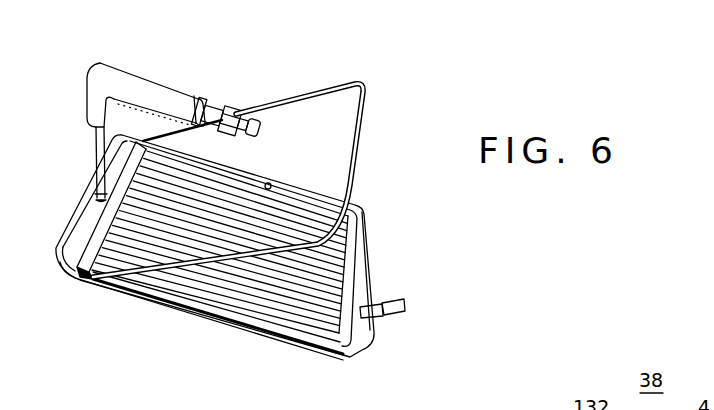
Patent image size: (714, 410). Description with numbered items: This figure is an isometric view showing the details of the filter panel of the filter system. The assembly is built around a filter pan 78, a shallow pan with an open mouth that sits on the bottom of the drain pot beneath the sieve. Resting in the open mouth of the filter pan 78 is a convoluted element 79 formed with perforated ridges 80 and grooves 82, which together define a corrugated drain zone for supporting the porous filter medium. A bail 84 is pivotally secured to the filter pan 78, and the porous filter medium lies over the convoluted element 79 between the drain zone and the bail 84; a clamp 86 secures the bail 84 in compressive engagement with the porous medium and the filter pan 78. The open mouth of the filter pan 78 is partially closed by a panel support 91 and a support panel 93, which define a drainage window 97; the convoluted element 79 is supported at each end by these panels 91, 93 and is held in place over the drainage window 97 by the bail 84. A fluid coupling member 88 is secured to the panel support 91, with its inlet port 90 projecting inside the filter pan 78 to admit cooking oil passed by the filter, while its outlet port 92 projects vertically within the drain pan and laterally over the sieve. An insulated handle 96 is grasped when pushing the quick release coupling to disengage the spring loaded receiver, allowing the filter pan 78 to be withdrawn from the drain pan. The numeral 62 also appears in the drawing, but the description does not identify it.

The vertical supply pipe 62 is at (97, 147).
The filter pan 78 is at (170, 303).
The convoluted element 79 is at (210, 287).
The perforated ridges 80 is at (260, 303).
The grooves 82 is at (327, 327).
The bail 84 is at (367, 123).
The clamp 86 is at (397, 301).
The fluid coupling member 88 is at (233, 112).
The inlet port 90 is at (98, 206).
The panel support 91 is at (72, 247).
The outlet port 92 is at (263, 132).
The support panel 93 is at (358, 242).
The insulated handle 96 is at (130, 72).
The drainage window 97 is at (268, 183).